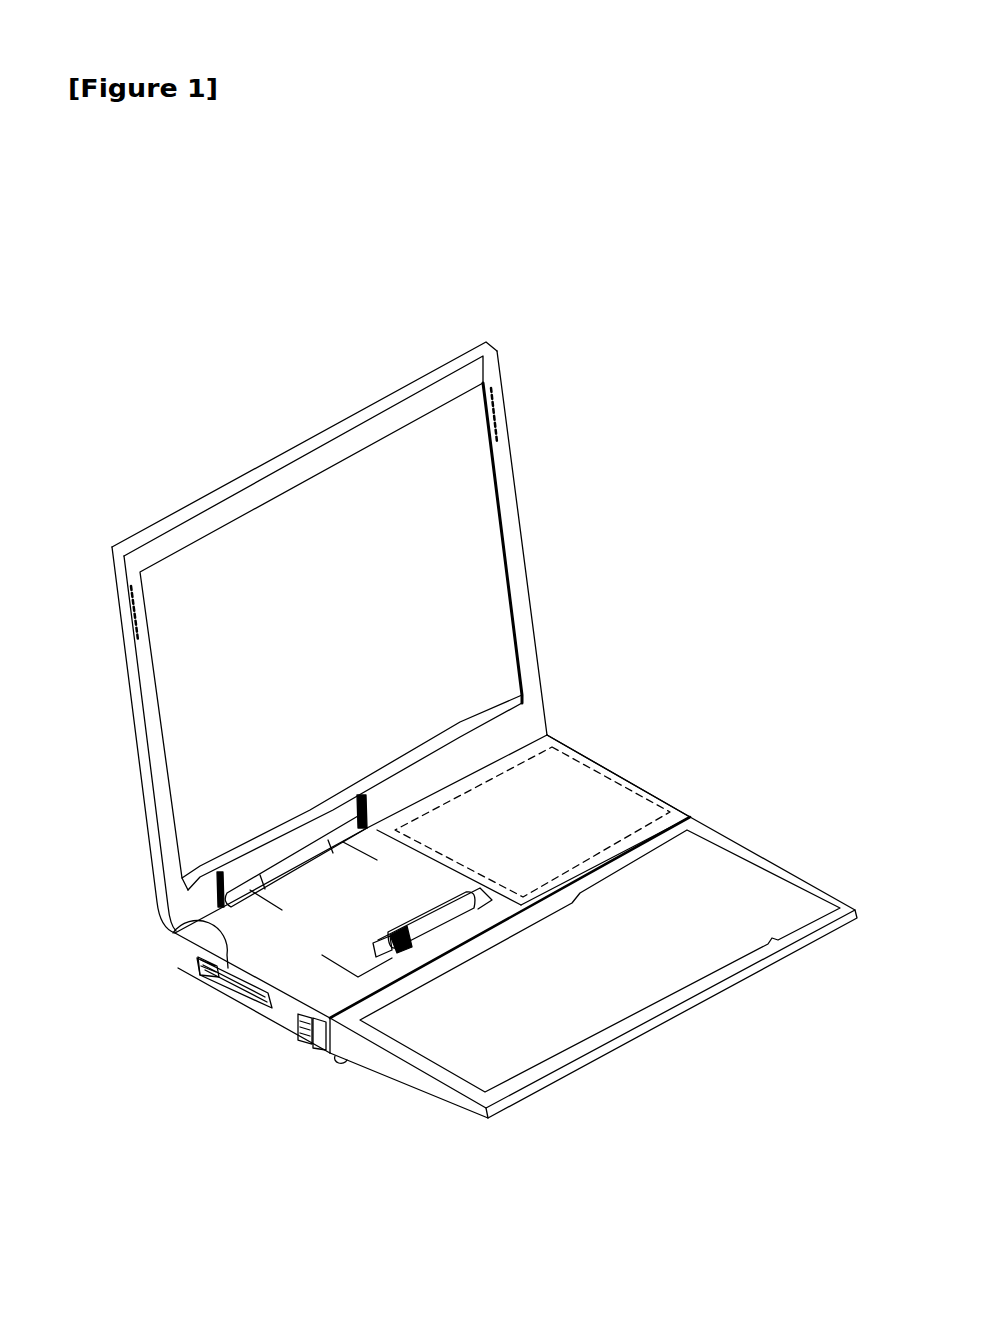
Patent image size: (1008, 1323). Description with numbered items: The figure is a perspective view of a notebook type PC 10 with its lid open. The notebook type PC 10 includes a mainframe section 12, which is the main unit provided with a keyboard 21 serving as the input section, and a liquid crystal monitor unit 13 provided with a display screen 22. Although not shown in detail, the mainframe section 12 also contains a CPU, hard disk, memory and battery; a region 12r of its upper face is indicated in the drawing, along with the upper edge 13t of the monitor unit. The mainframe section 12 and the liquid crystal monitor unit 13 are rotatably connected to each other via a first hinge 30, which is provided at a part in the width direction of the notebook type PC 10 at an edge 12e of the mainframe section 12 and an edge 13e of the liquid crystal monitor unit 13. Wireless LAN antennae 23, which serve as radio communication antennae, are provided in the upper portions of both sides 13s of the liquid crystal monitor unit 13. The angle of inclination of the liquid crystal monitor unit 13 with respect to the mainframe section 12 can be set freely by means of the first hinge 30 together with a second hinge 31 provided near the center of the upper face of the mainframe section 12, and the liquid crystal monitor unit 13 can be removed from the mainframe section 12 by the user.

The notebook type PC 10 is at (640, 317).
The mainframe section 12 is at (603, 800).
The recess of main body 12r is at (673, 810).
The edge of the mainframe section 12e is at (220, 980).
The liquid crystal monitor unit 13 is at (512, 543).
The top edge of display unit 13t is at (263, 468).
The sides of the liquid crystal monitor unit 13s is at (500, 373).
The edge of the liquid crystal monitor unit 13e is at (171, 932).
The display screen 22 is at (363, 487).
The wireless LAN antennae 23 is at (507, 408).
The keyboard 21 is at (760, 893).
The first hinge 30 is at (297, 858).
The second hinge 31 is at (433, 925).